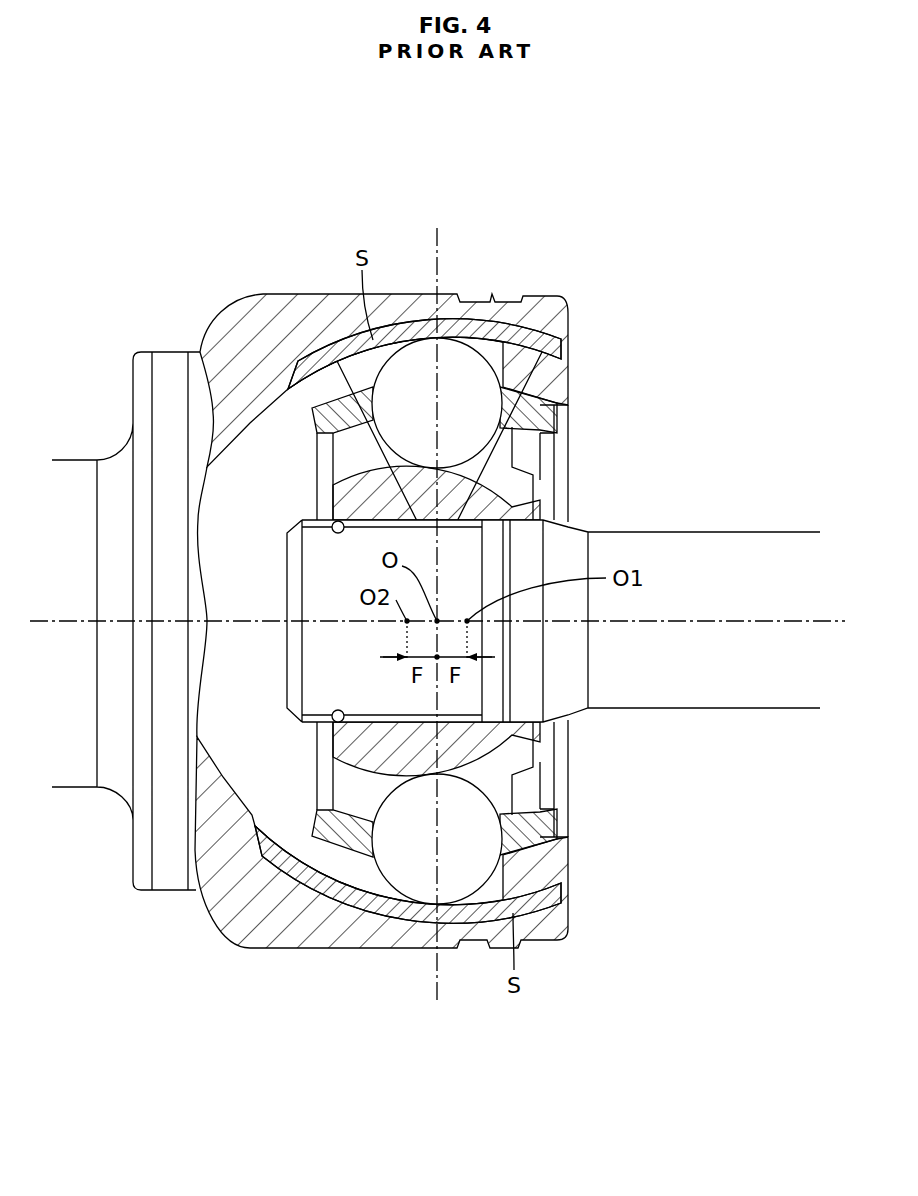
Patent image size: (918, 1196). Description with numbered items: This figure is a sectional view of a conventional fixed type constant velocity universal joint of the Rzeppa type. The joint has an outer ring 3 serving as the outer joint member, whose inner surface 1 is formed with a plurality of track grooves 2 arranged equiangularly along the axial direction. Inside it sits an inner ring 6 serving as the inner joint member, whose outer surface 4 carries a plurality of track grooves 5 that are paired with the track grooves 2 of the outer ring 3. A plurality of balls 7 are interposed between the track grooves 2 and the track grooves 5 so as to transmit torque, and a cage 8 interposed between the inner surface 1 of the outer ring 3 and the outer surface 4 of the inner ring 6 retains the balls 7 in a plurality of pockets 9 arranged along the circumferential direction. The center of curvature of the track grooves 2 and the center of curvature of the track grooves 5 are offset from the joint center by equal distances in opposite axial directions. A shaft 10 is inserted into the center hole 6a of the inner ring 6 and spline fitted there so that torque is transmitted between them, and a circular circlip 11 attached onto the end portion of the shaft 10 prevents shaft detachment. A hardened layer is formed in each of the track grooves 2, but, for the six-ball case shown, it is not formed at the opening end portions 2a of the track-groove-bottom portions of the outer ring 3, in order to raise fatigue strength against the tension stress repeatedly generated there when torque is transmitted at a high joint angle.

The inner surface 1 is at (338, 375).
The track grooves 2 is at (527, 350).
The opening end portions 2a is at (561, 342).
The outer ring 3 is at (336, 292).
The outer surface 4 is at (338, 850).
The track grooves 5 is at (355, 775).
The inner ring 6 is at (541, 750).
The center hole 6a is at (332, 530).
The balls 7 is at (407, 377).
The cage 8 is at (559, 823).
The pockets 9 is at (497, 393).
The shaft 10 is at (733, 530).
The circlip 11 is at (333, 721).